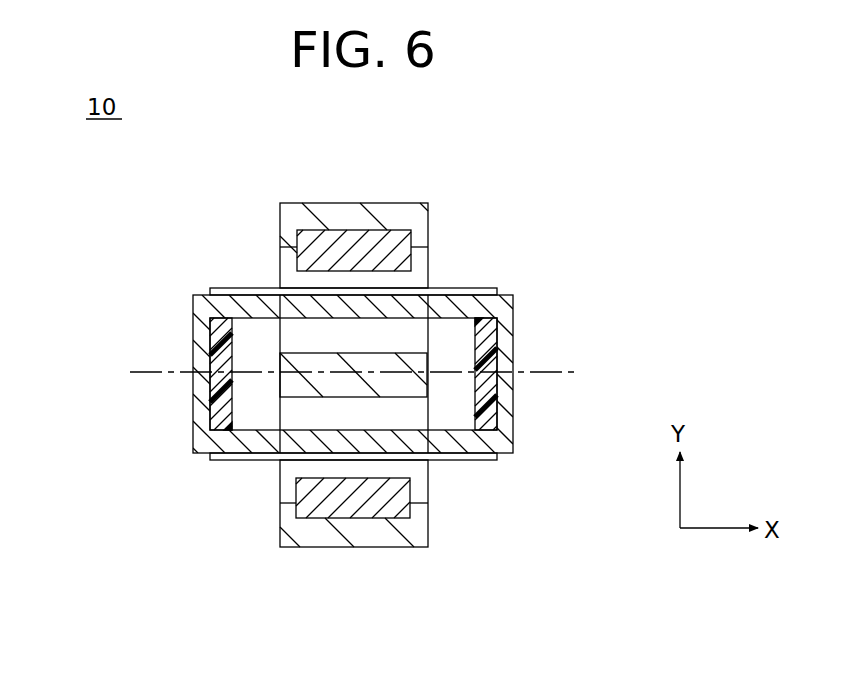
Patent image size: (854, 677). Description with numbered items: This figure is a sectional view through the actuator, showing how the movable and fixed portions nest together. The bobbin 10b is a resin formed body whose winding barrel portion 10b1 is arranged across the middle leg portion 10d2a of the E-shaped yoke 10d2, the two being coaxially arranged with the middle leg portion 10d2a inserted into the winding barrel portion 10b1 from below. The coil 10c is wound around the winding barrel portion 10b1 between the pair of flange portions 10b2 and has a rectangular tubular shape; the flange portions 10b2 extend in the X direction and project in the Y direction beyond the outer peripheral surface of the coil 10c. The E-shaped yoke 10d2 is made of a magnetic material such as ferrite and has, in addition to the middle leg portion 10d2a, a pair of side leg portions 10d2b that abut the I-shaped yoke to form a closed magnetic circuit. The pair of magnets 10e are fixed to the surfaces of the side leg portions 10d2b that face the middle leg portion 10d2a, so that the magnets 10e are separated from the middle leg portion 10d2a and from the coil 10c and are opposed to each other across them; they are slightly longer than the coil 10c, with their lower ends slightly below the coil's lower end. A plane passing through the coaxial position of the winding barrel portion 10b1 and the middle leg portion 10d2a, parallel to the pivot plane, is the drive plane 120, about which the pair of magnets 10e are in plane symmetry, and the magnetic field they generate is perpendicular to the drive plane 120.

The bobbin 10b is at (210, 333).
The winding barrel portion 10b1 is at (487, 417).
The flange portions 10b2 is at (222, 289).
The coil 10c is at (508, 298).
The E-shaped yoke 10d2 is at (318, 202).
The middle leg portion 10d2a is at (290, 383).
The side leg portions 10d2b is at (292, 213).
The magnets 10e is at (376, 250).
The drive plane 120 is at (560, 371).